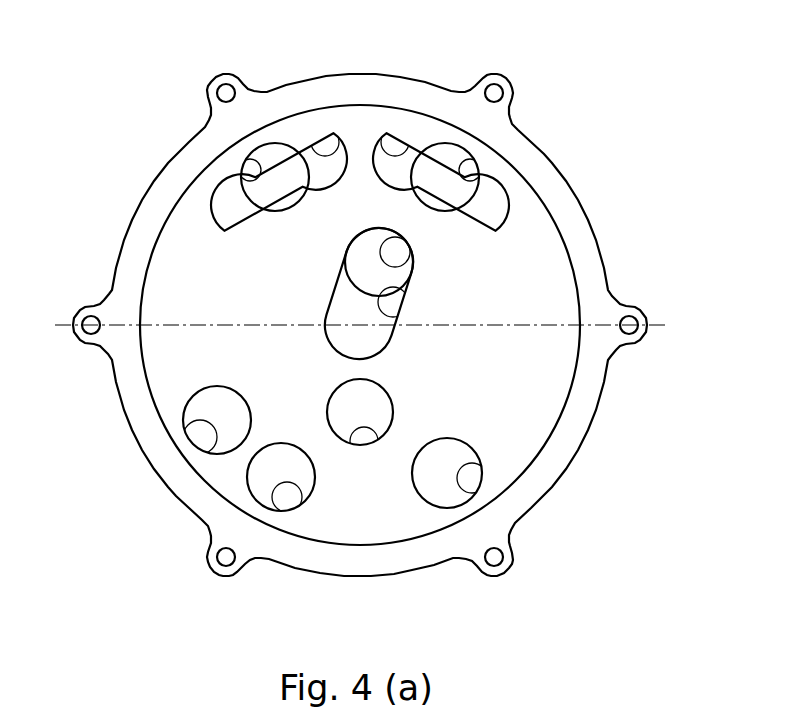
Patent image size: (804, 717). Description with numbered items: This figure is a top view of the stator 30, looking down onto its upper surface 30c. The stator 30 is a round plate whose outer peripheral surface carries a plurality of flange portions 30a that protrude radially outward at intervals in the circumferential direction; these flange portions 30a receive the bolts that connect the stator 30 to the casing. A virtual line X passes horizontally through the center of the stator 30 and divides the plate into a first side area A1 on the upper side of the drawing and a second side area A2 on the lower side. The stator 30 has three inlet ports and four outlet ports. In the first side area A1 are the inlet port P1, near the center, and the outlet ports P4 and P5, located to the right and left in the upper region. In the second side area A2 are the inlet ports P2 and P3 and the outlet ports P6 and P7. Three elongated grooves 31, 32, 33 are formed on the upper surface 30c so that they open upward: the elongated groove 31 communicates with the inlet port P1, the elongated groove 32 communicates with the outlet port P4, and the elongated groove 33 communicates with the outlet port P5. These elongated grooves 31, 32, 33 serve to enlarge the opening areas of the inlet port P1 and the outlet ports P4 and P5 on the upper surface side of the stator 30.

The stator 30 is at (575, 152).
The flange portion 30a is at (627, 307).
The upper surface 30c is at (530, 408).
The elongated groove 31 is at (403, 288).
The elongated groove 32 is at (410, 137).
The elongated groove 33 is at (314, 138).
The inlet port P1 is at (400, 245).
The inlet port P2 is at (300, 497).
The inlet port P3 is at (376, 447).
The outlet port P4 is at (468, 167).
The outlet port P5 is at (252, 167).
The outlet port P6 is at (204, 448).
The outlet port P7 is at (476, 466).
The first side area A1 is at (173, 257).
The second side area A2 is at (160, 370).
The virtual line X is at (348, 324).